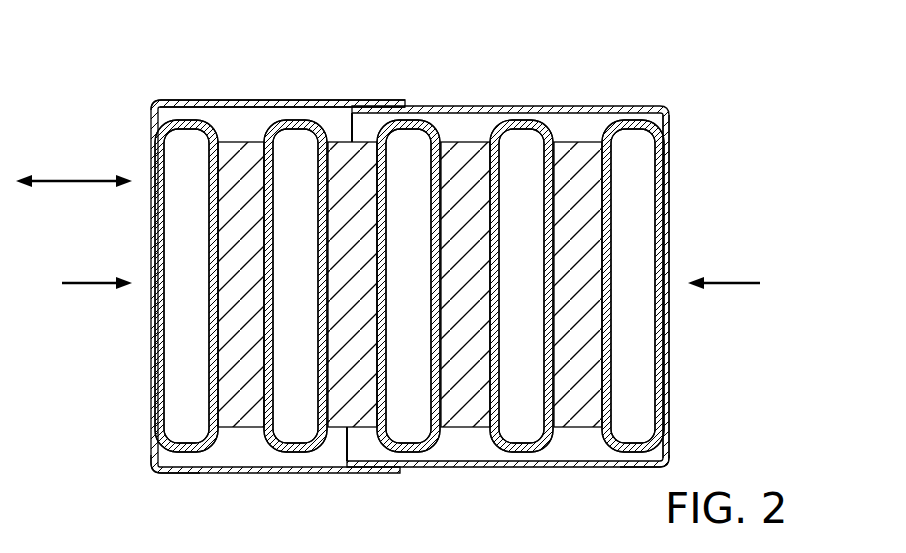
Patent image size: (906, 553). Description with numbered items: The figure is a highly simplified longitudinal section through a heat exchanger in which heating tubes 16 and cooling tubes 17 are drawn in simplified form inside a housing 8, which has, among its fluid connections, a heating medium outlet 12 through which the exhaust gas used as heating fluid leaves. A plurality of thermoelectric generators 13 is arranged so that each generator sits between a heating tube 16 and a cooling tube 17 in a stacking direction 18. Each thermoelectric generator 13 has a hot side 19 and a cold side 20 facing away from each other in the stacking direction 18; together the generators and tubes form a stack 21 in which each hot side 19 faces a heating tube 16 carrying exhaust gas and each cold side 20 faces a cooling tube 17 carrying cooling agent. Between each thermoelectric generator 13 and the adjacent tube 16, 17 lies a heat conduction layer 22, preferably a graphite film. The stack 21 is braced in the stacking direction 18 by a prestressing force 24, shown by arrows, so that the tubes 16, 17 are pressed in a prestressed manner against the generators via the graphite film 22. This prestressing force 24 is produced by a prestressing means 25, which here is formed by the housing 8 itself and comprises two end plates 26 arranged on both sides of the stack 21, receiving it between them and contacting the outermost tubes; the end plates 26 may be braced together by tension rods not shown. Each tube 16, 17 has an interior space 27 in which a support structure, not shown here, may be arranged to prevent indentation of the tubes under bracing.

The housing 8 is at (165, 100).
The heating medium outlet 12 is at (179, 462).
The thermoelectric generator 13 is at (241, 134).
The heating tube 16 is at (292, 462).
The cooling tube 17 is at (406, 462).
The stacking direction 18 is at (90, 178).
The hot side 19 is at (273, 235).
The cold side 20 is at (207, 232).
The stack 21 is at (682, 138).
The heat conduction layer 22 is at (207, 352).
The prestressing force 24 is at (97, 287).
The prestressing means 25 is at (267, 92).
The end plate 26 is at (151, 455).
The interior space 27 is at (183, 150).